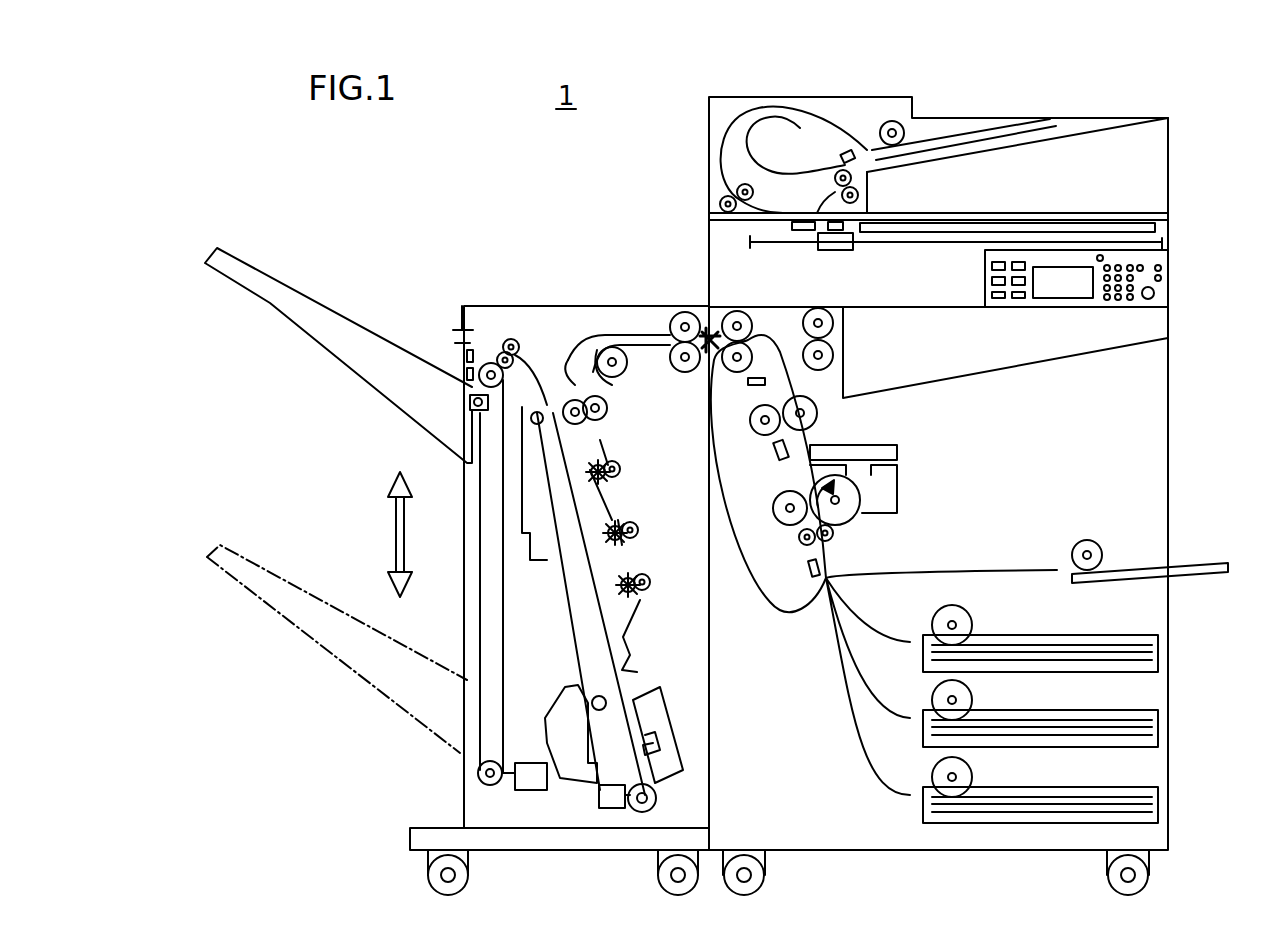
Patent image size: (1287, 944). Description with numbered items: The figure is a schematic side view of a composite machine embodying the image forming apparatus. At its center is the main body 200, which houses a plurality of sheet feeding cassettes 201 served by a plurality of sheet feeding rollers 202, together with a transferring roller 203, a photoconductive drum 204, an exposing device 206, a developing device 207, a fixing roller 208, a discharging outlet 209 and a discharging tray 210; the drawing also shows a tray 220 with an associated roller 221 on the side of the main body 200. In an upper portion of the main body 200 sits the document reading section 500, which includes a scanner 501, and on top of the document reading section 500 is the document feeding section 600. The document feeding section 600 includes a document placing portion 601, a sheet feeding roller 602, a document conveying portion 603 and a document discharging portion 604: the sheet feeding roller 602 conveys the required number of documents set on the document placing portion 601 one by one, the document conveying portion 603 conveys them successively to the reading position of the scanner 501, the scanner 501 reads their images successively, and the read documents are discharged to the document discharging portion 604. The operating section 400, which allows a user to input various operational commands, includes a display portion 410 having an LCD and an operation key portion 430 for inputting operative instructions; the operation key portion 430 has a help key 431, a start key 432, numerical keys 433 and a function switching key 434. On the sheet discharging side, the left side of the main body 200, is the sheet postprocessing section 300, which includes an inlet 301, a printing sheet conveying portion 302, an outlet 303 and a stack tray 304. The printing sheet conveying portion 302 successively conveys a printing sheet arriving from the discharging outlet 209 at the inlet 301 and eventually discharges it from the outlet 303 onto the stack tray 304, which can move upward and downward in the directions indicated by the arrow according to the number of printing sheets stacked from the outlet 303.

The main body 200 is at (1141, 452).
The sheet feeding cassettes 201 is at (1160, 652).
The sheet feeding rollers 202 is at (970, 622).
The transferring roller 203 is at (790, 522).
The photoconductive drum 204 is at (848, 518).
The exposing device 206 is at (895, 453).
The developing device 207 is at (892, 475).
The fixing roller 208 is at (765, 432).
The discharging outlet 209 is at (735, 312).
The discharging tray 210 is at (1040, 372).
The manual feed tray 220 is at (1185, 580).
The manual feed roller 221 is at (1072, 540).
The sheet postprocessing section 300 is at (516, 305).
The inlet 301 is at (676, 312).
The printing sheet conveying portion 302 is at (600, 330).
The outlet 303 is at (455, 328).
The stack tray 304 is at (386, 410).
The operating section 400 is at (1176, 274).
The display portion 410 is at (1063, 280).
The operation key portion 430 is at (1172, 294).
The help key 431 is at (1103, 256).
The start key 432 is at (1146, 300).
The numerical keys 433 is at (1165, 245).
The function switching key 434 is at (985, 283).
The document reading section 500 is at (1176, 224).
The scanner 501 is at (840, 252).
The document feeding section 600 is at (982, 118).
The document placing portion 601 is at (1090, 122).
The sheet feeding roller 602 is at (905, 128).
The document conveying portion 603 is at (770, 170).
The document discharging portion 604 is at (975, 205).